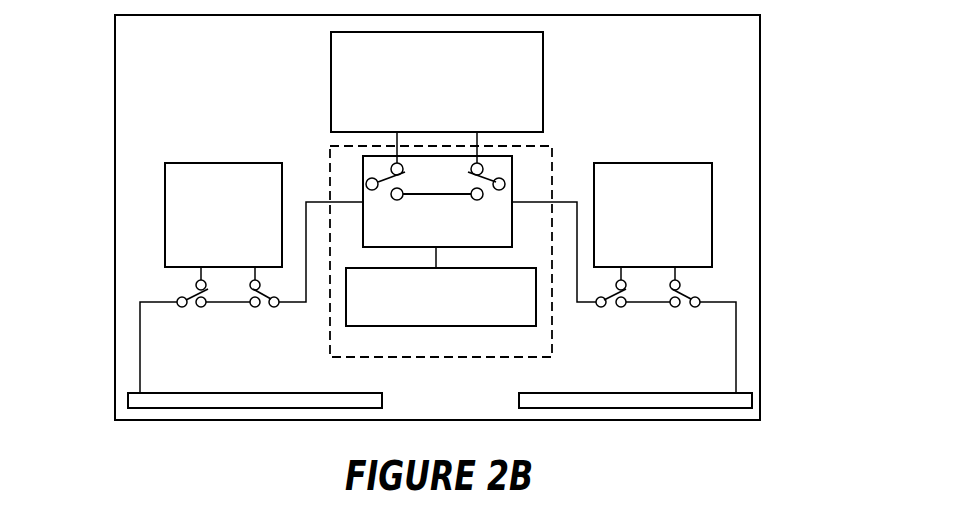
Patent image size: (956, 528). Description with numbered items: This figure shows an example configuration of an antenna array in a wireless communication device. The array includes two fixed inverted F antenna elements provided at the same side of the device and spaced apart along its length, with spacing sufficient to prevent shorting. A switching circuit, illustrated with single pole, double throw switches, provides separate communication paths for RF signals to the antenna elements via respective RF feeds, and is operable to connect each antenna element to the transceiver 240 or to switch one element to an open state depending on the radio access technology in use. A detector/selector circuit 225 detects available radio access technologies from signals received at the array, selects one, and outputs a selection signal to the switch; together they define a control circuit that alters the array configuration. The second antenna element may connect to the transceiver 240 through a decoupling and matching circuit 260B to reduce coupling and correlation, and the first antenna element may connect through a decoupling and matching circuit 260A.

The transceiver 240 is at (449, 101).
The detector/selector circuit 225 is at (453, 316).
The decoupling and matching circuit 260B is at (240, 245).
The decoupling and matching circuit 260A is at (670, 245).